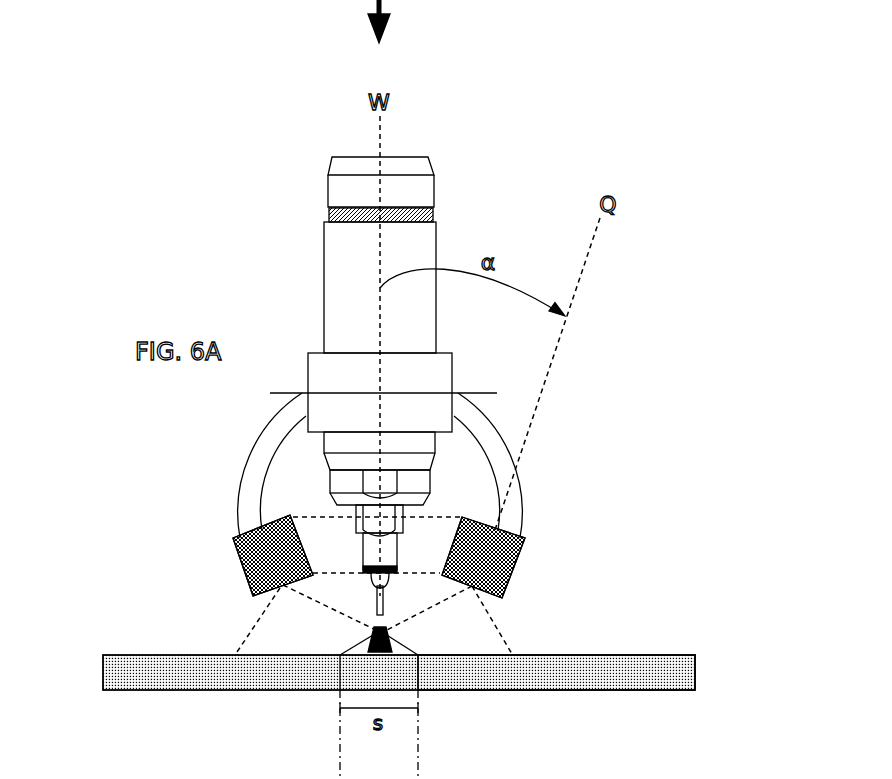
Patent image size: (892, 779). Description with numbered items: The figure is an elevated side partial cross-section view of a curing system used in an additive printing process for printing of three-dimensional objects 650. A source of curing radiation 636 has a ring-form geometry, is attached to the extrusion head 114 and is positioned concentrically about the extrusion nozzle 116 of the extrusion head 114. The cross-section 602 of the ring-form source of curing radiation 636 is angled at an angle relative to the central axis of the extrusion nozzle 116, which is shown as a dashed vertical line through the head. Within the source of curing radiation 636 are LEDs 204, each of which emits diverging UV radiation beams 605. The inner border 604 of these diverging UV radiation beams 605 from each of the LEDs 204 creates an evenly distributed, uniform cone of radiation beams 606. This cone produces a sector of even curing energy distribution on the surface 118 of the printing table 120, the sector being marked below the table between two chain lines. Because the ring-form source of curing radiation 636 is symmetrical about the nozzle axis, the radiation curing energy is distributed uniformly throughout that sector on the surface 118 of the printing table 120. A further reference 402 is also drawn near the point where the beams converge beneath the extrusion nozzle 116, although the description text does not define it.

The extrusion head 114 is at (401, 155).
The extrusion nozzle 116 is at (373, 587).
The surface 118 is at (158, 655).
The printing table 120 is at (668, 690).
The LEDs 204 is at (283, 575).
The weld joint 402 is at (380, 637).
The cross-section 602 is at (250, 582).
The inner border 604 is at (320, 600).
The diverging UV radiation beams 605 is at (257, 625).
The cone of radiation beams 606 is at (403, 646).
The source of curing radiation 636 is at (520, 528).
The 3-D objects 650 is at (205, 508).